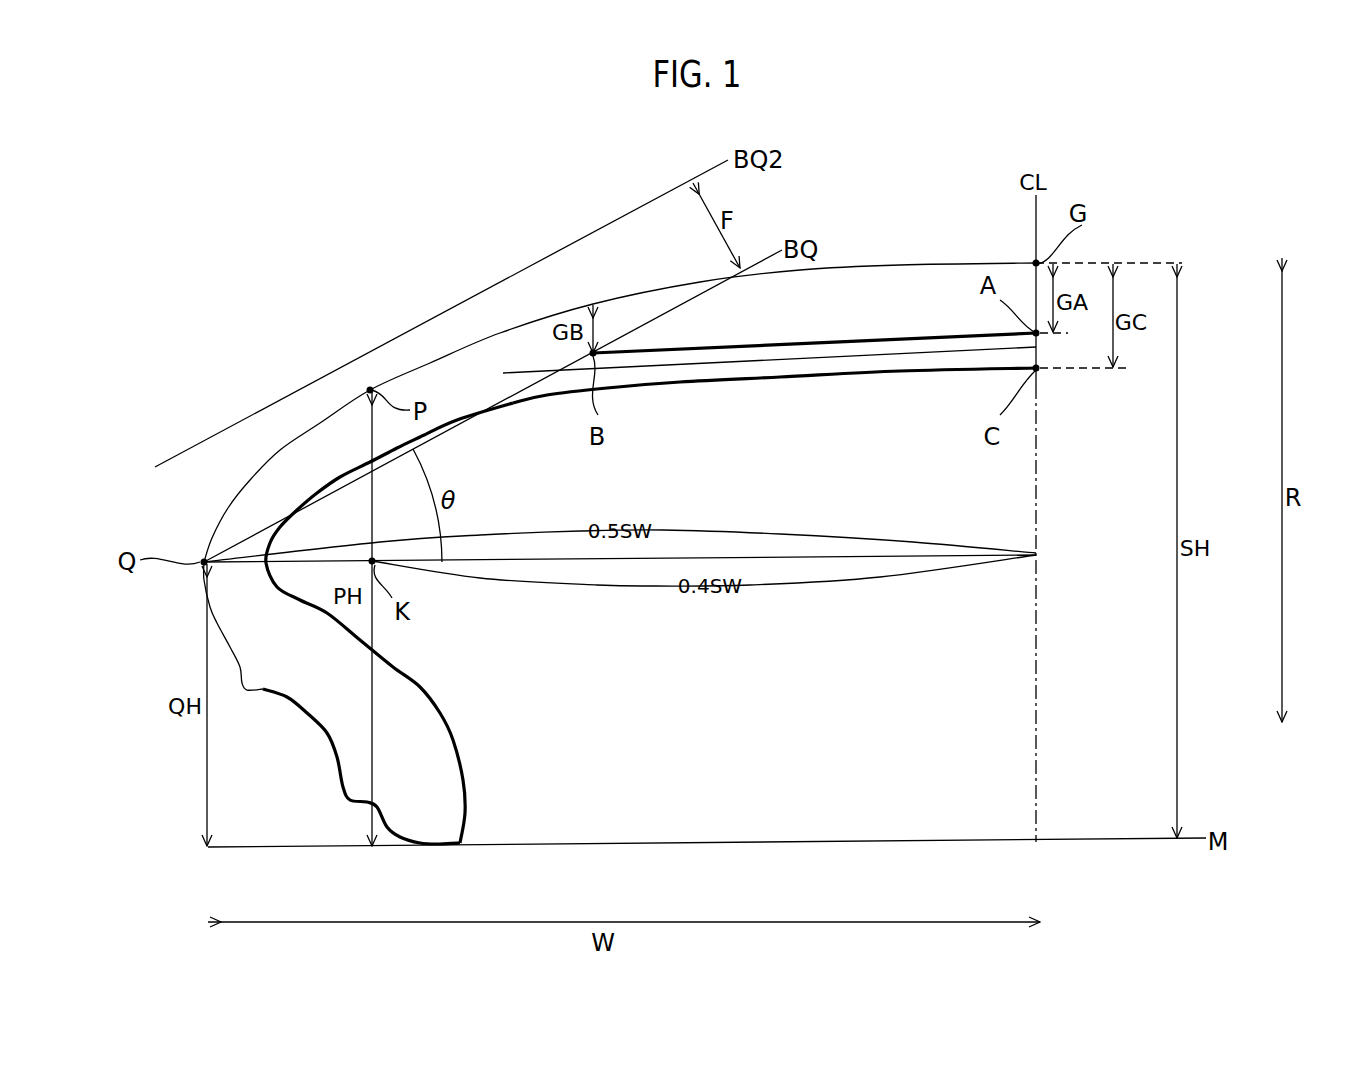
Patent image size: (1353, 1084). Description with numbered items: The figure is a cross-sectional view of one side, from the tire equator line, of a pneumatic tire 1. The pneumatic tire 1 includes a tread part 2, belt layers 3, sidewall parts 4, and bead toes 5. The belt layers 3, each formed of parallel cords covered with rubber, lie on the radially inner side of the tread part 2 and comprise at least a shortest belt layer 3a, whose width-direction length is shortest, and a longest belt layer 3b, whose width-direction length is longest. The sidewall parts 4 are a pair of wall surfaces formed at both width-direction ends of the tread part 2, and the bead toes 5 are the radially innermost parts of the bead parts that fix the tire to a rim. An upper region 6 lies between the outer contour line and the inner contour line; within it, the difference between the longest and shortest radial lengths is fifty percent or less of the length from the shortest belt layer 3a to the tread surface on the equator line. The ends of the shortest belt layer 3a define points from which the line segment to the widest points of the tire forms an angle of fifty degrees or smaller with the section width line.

The pneumatic tire 1 is at (1131, 177).
The tread part 2 is at (890, 265).
The belt layers 3 is at (847, 428).
The shortest belt layer 3a is at (867, 340).
The longest belt layer 3b is at (933, 353).
The sidewall parts 4 is at (227, 597).
The bead toes 5 is at (450, 810).
The upper region 6 is at (932, 287).